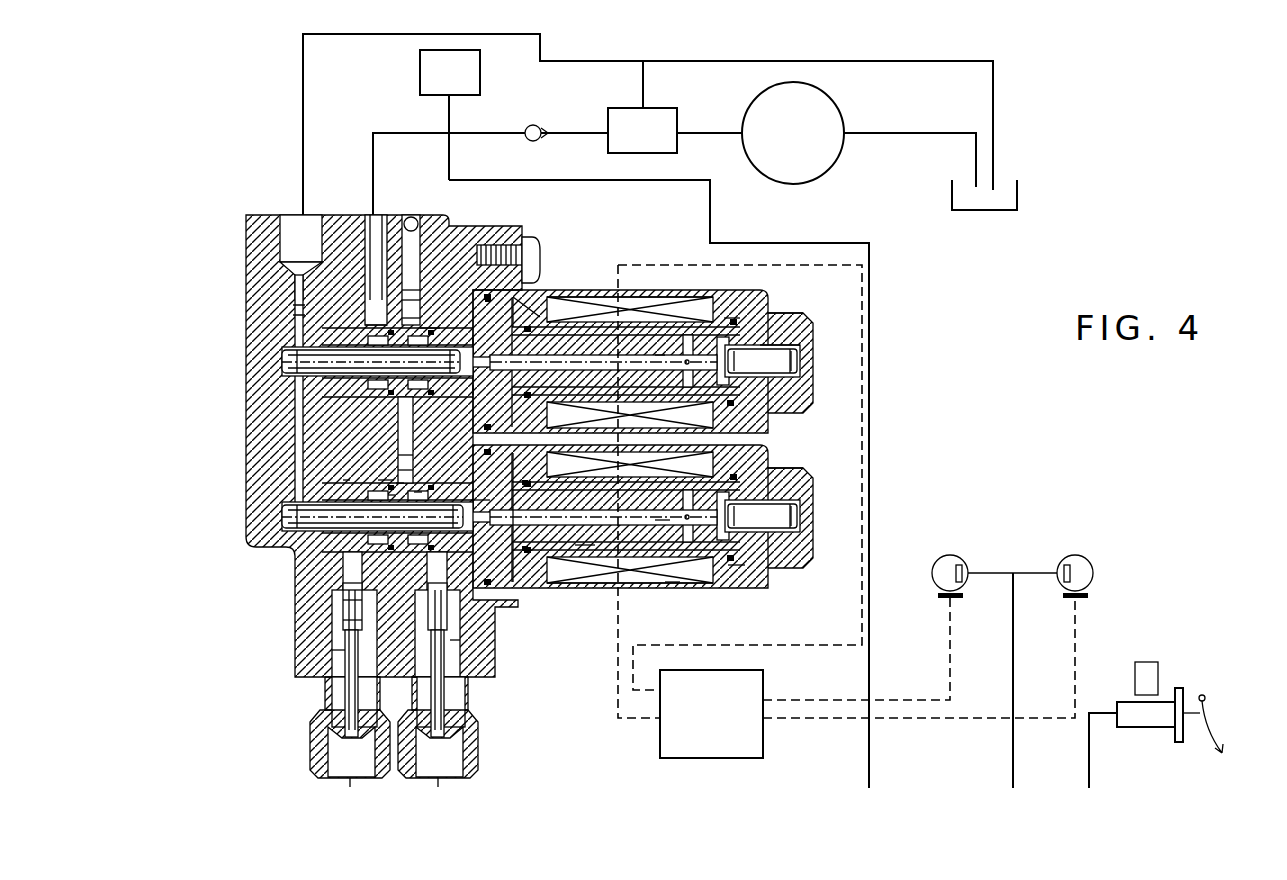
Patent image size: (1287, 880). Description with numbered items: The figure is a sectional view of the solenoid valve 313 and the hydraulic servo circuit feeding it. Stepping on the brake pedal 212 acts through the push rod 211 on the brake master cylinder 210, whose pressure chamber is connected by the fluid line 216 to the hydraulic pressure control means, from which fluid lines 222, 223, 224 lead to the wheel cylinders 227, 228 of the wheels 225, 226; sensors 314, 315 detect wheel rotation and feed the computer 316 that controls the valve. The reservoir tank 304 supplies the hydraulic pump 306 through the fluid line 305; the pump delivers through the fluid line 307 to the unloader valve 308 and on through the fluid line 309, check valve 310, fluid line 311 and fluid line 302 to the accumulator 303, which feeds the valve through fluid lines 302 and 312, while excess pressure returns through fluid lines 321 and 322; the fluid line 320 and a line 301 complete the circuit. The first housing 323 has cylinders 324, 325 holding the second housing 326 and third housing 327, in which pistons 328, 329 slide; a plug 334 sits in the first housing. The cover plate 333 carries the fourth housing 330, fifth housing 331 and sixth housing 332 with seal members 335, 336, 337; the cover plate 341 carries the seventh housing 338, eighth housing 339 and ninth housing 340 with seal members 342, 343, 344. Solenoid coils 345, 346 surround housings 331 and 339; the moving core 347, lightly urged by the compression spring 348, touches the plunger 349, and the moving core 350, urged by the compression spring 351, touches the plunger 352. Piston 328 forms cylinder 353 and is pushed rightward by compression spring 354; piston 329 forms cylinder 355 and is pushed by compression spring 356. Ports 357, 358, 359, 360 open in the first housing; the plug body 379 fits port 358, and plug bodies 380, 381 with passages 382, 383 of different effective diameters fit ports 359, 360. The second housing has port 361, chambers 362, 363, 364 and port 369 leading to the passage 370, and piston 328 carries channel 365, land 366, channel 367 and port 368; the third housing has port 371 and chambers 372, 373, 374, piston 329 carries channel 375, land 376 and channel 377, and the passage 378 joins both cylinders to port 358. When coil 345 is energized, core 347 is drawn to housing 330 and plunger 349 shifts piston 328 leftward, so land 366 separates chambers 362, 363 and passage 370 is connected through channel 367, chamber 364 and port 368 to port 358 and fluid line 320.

The brake master cylinder 210 is at (1135, 727).
The push rod 211 is at (1190, 742).
The brake pedal 212 is at (1207, 713).
The fluid line 216 is at (1089, 760).
The fluid line 222 is at (1013, 760).
The fluid line 223 is at (995, 578).
The fluid line 224 is at (1030, 578).
The wheel 225 is at (940, 560).
The wheel 226 is at (1085, 560).
The wheel cylinder 227 is at (953, 562).
The wheel cylinder 228 is at (1071, 562).
The conduit 301 is at (869, 758).
The fluid line 302 is at (449, 121).
The accumulator 303 is at (420, 72).
The reservoir tank 304 is at (1003, 185).
The fluid line 305 is at (905, 133).
The hydraulic pump 306 is at (845, 142).
The fluid line 307 is at (698, 133).
The unloader valve 308 is at (618, 153).
The fluid line 309 is at (575, 133).
The check valve 310 is at (532, 125).
The fluid line 311 is at (473, 133).
The fluid line 312 is at (395, 134).
The solenoid valve 313 is at (200, 207).
The sensor 314 is at (938, 597).
The sensor 315 is at (1085, 597).
The computer 316 is at (660, 740).
The fluid line 320 is at (305, 150).
The fluid line 321 is at (648, 86).
The fluid line 322 is at (718, 61).
The first housing 323 is at (420, 225).
The cylinder 324 is at (425, 330).
The cylinder 325 is at (522, 478).
The second housing 326 is at (325, 330).
The third housing 327 is at (328, 495).
The piston 328 is at (345, 480).
The piston 329 is at (343, 590).
The fourth housing 330 is at (533, 325).
The fifth housing 331 is at (540, 322).
The sixth housing 332 is at (775, 318).
The cover plate 333 is at (706, 287).
The plug 334 is at (535, 240).
The seal member 335 is at (488, 297).
The seal member 336 is at (525, 330).
The seal member 337 is at (727, 320).
The seventh housing 338 is at (525, 578).
The eighth housing 339 is at (583, 545).
The ninth housing 340 is at (755, 584).
The cover plate 341 is at (673, 580).
The seal member 342 is at (505, 588).
The seal member 343 is at (522, 548).
The seal member 344 is at (735, 567).
The solenoid coil 345 is at (634, 300).
The solenoid coil 346 is at (632, 578).
The moving core 347 is at (785, 345).
The compression spring 348 is at (797, 362).
The plunger 349 is at (660, 365).
The moving core 350 is at (770, 488).
The compression spring 351 is at (800, 512).
The plunger 352 is at (663, 522).
The cylinder 353 is at (494, 393).
The compression spring 354 is at (282, 362).
The cylinder 355 is at (345, 555).
The compression spring 356 is at (290, 548).
The port 357 is at (380, 218).
The port 358 is at (284, 216).
The port 359 is at (345, 650).
The port 360 is at (460, 643).
The port 361 is at (380, 325).
The chamber 362 is at (410, 288).
The chamber 363 is at (413, 300).
The chamber 364 is at (420, 318).
The channel 365 is at (382, 480).
The land 366 is at (412, 440).
The channel 367 is at (414, 455).
The port 368 is at (470, 345).
The port 369 is at (390, 480).
The passage 370 is at (414, 470).
The port 371 is at (400, 483).
The chamber 372 is at (418, 492).
The chamber 373 is at (392, 495).
The chamber 374 is at (522, 500).
The channel 375 is at (362, 590).
The land 376 is at (360, 600).
The channel 377 is at (360, 620).
The passage 378 is at (296, 440).
The plug body 379 is at (310, 216).
The plug body 380 is at (318, 712).
The plug body 381 is at (476, 712).
The passage 382 is at (362, 640).
The passage 383 is at (445, 663).